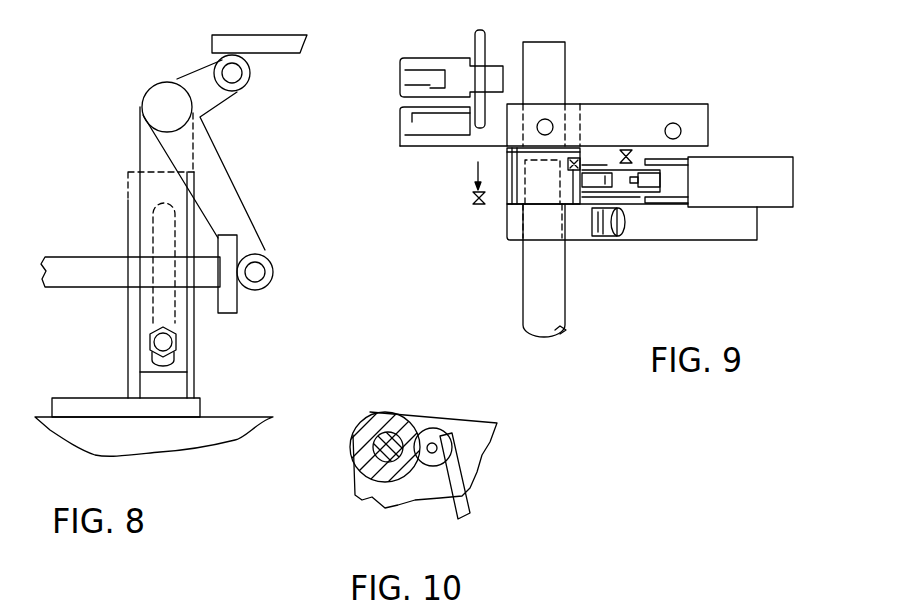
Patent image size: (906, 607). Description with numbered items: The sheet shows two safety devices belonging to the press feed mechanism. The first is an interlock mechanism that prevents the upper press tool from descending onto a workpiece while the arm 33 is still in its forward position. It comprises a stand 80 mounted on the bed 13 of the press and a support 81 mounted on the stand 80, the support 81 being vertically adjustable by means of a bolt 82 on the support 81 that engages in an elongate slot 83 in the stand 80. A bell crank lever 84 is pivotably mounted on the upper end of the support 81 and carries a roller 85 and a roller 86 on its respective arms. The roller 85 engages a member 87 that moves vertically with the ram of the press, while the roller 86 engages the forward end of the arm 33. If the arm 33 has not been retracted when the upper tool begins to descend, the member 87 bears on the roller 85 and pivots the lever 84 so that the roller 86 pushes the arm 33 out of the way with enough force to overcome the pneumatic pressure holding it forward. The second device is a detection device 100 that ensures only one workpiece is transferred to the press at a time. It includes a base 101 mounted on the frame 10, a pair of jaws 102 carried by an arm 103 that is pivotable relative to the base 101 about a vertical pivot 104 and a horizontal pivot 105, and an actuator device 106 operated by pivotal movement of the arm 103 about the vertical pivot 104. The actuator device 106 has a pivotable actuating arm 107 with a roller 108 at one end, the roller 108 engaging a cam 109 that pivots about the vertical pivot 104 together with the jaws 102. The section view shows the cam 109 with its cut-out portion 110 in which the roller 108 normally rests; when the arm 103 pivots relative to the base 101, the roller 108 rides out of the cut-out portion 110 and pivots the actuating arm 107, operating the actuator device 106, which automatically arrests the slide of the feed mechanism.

In FIG. 9, the frame 10 is at (537, 306).
In FIG. 8, the bed 13 is at (227, 430).
In FIG. 8, the arm 33 is at (54, 254).
In FIG. 8, the stand 80 is at (195, 383).
In FIG. 8, the support 81 is at (138, 311).
In FIG. 8, the bolt 82 is at (172, 342).
In FIG. 8, the elongate slot 83 is at (130, 214).
In FIG. 8, the bell crank lever 84 is at (223, 200).
In FIG. 8, the roller 85 is at (240, 81).
In FIG. 8, the roller 86 is at (274, 272).
In FIG. 8, the member 87 is at (287, 50).
In FIG. 9, the detection device 100 is at (634, 100).
In FIG. 9, the base 101 is at (718, 228).
In FIG. 10, the base 101 is at (418, 490).
In FIG. 9, the jaws 102 is at (405, 80).
In FIG. 9, the arm 103 is at (495, 130).
In FIG. 9, the vertical pivot 104 is at (507, 210).
In FIG. 10, the vertical pivot 104 is at (383, 485).
In FIG. 9, the horizontal pivot 105 is at (551, 121).
In FIG. 9, the actuator device 106 is at (758, 185).
In FIG. 9, the actuating arm 107 is at (632, 205).
In FIG. 10, the actuating arm 107 is at (473, 510).
In FIG. 9, the roller 108 is at (590, 183).
In FIG. 10, the roller 108 is at (445, 427).
In FIG. 9, the cam 109 is at (568, 175).
In FIG. 10, the cam 109 is at (380, 415).
In FIG. 9, the cut-out portion 110 is at (590, 153).
In FIG. 10, the cut-out portion 110 is at (418, 440).